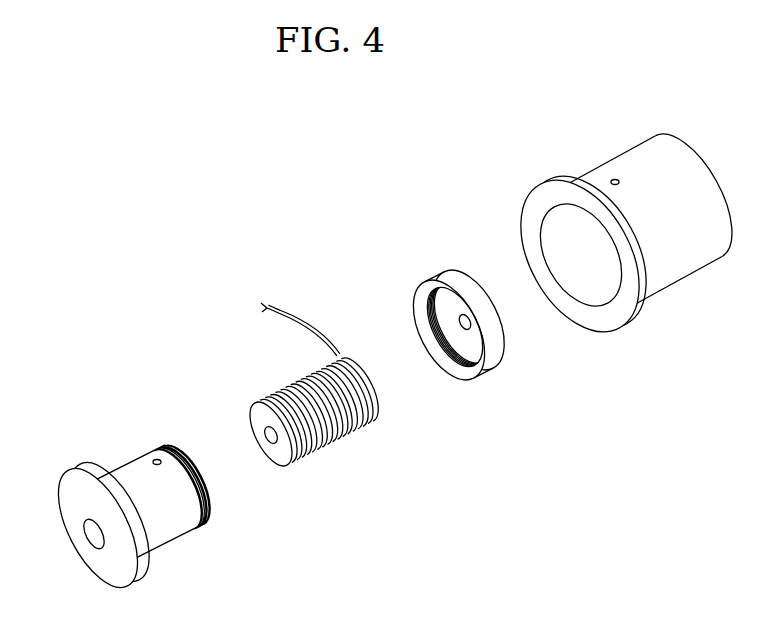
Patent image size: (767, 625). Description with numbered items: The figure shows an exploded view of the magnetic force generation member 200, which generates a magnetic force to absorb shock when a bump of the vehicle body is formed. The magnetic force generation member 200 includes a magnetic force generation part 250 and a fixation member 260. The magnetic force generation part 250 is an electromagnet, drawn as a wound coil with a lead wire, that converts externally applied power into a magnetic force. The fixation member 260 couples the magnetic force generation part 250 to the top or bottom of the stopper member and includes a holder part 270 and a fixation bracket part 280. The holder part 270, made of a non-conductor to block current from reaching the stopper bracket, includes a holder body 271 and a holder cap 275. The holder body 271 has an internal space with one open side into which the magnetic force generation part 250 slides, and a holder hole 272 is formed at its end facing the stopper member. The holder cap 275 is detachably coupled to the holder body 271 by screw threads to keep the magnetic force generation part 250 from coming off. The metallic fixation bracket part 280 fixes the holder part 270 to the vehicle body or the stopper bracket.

The magnetic force generation member 200 is at (119, 208).
The magnetic force generation part 250 is at (268, 390).
The fixation member 260 is at (387, 366).
The holder part 270 is at (258, 522).
The holder body 271 is at (216, 527).
The holder hole 272 is at (153, 525).
The holder cap 275 is at (477, 388).
The fixation bracket part 280 is at (614, 289).